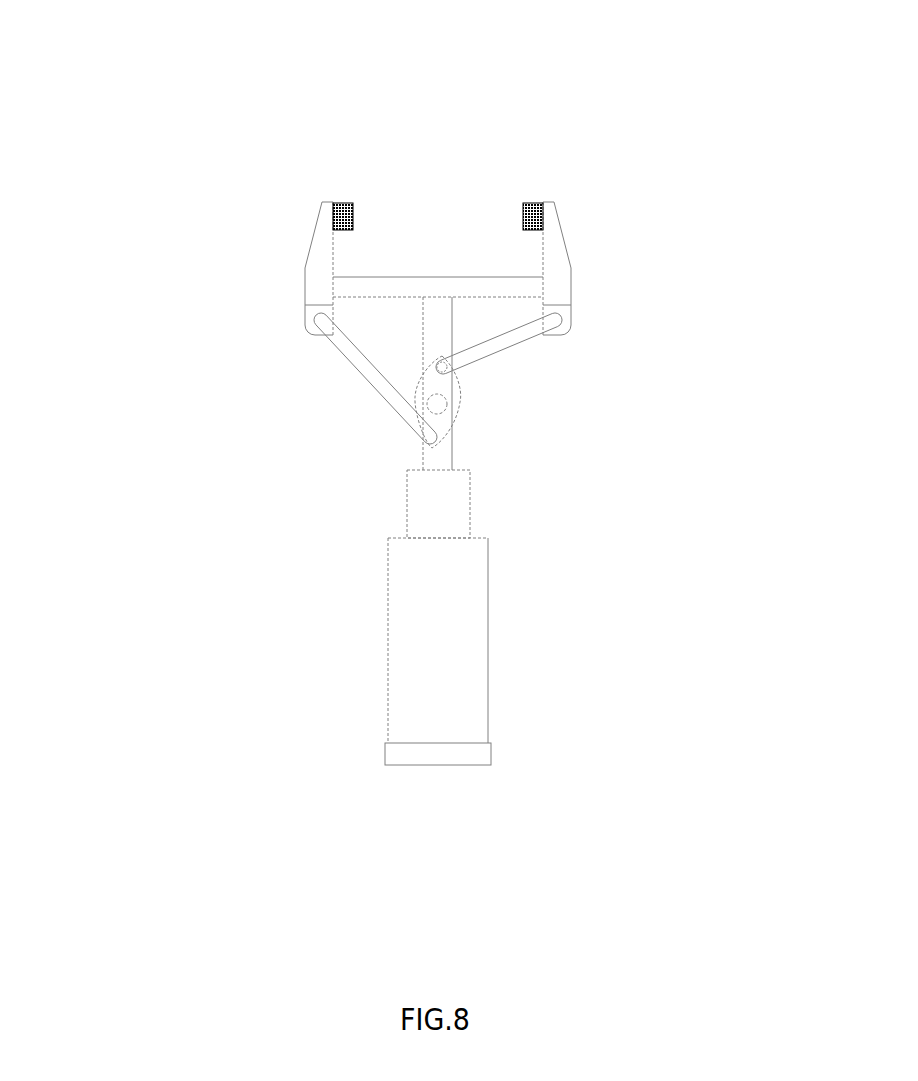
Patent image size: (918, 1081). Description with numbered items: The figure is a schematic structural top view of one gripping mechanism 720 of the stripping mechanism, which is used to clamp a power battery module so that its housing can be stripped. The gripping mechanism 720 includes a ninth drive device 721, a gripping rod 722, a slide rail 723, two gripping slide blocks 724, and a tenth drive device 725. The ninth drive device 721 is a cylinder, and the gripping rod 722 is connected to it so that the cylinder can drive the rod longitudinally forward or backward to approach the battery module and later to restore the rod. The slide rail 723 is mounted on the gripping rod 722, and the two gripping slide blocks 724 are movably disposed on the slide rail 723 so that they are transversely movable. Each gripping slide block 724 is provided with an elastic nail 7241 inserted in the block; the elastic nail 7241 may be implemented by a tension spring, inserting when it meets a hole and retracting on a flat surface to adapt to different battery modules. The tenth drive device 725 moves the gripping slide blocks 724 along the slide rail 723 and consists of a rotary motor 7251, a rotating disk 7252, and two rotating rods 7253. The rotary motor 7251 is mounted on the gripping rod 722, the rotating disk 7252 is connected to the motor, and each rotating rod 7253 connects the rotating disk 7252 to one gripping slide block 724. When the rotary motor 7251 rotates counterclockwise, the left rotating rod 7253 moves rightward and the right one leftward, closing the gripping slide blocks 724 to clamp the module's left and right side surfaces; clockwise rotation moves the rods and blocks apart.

The gripping mechanism 720 is at (185, 90).
The ninth drive device 721 is at (453, 670).
The gripping rod 722 is at (435, 330).
The slide rail 723 is at (525, 287).
The gripping slide block 724 is at (320, 258).
The elastic nail 7241 is at (535, 210).
The tenth drive device 725 is at (782, 357).
The rotary motor 7251 is at (437, 405).
The rotating disk 7252 is at (443, 383).
The rotating rod 7253 is at (333, 335).